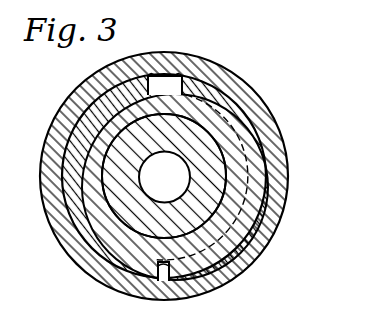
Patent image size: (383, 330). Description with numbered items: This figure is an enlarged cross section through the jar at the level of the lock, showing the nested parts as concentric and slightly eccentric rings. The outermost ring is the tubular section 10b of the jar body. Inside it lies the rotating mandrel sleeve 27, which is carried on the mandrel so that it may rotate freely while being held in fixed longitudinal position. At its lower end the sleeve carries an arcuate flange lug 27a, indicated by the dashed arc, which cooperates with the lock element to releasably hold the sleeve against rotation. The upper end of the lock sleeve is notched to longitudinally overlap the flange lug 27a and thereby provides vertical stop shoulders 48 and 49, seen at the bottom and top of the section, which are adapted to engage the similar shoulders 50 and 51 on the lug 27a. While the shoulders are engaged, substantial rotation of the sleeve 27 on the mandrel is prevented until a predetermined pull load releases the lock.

The tubular section 10b is at (226, 285).
The rotating mandrel sleeve 27 is at (110, 228).
The arcuate flange lug 27a is at (258, 168).
The vertical stop shoulder 49 is at (151, 76).
The shoulder 51 is at (177, 76).
The vertical stop shoulder 48 is at (160, 280).
The shoulder 50 is at (165, 263).